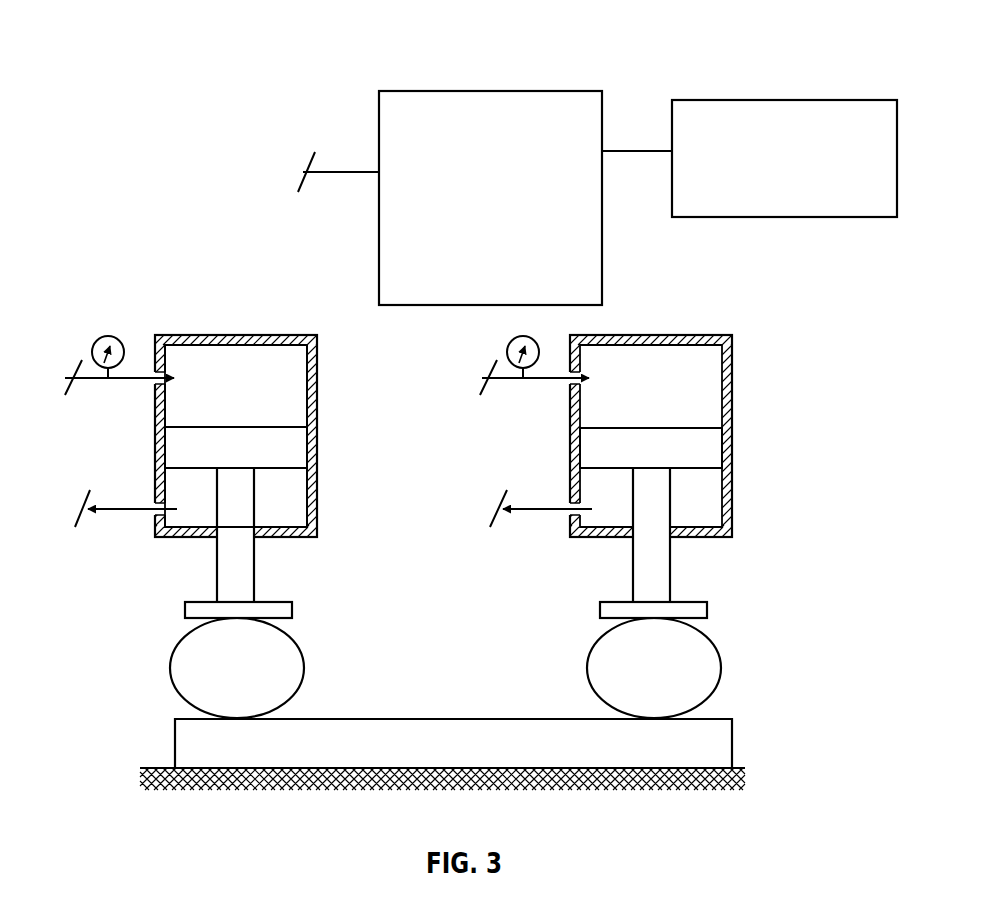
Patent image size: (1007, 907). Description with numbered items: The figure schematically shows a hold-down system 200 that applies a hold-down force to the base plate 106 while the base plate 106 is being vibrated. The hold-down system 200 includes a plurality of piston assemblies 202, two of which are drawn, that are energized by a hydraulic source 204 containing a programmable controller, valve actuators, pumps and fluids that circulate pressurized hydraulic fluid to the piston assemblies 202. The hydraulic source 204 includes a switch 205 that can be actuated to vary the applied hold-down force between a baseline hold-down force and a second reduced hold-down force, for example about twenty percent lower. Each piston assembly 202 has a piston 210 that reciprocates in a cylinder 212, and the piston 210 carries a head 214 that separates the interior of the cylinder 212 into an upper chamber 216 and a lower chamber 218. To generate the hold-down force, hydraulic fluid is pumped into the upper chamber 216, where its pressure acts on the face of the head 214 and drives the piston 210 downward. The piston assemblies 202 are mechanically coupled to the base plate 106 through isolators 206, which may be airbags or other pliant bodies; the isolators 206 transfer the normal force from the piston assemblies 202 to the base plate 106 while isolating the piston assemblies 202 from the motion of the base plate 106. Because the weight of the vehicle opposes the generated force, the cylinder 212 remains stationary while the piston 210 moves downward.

The hold-down system 200 is at (211, 32).
The base plate 106 is at (370, 719).
The piston assembly 202 is at (398, 403).
The hydraulic source 204 is at (538, 91).
The switch 205 is at (707, 100).
The isolator 206 is at (305, 668).
The piston 210 is at (255, 580).
The cylinder 212 is at (193, 335).
The piston head 214 is at (195, 427).
The upper chamber 216 is at (300, 400).
The lower chamber 218 is at (300, 503).